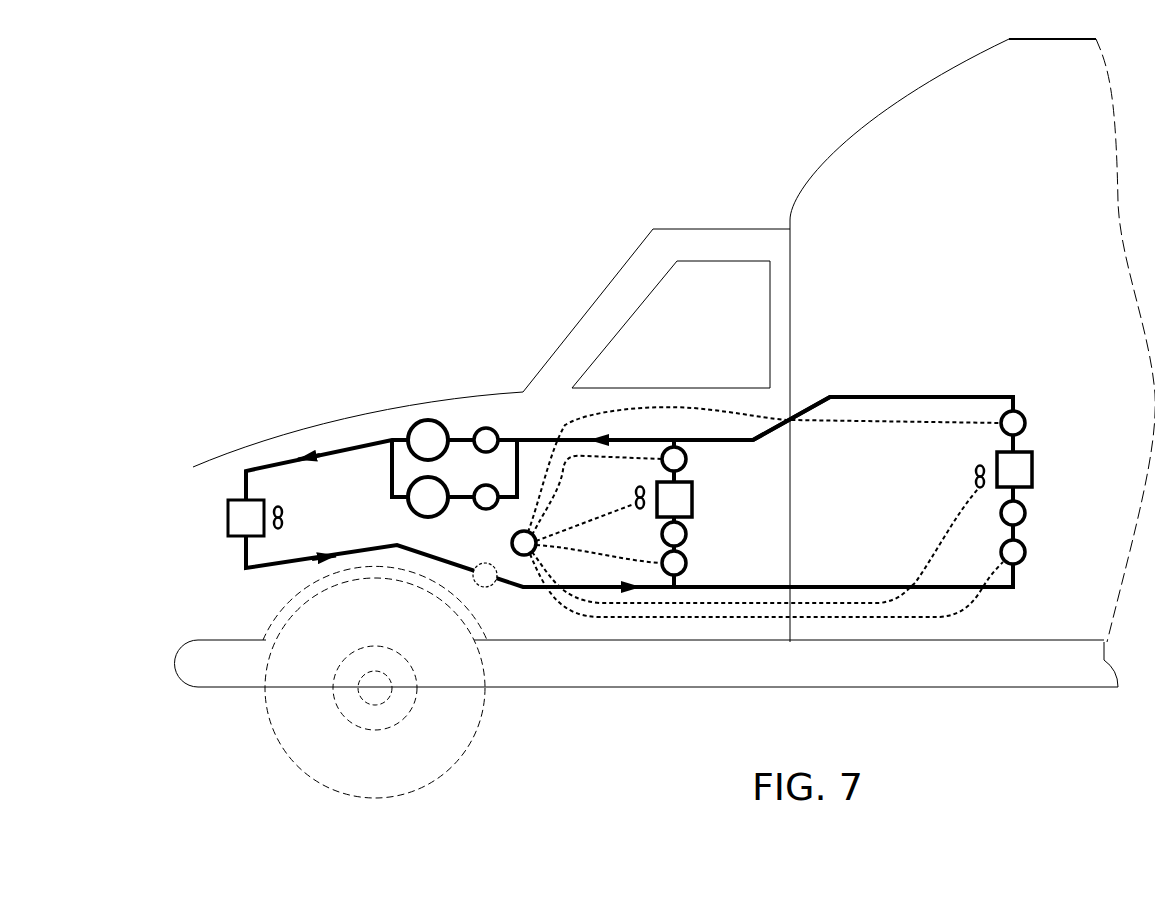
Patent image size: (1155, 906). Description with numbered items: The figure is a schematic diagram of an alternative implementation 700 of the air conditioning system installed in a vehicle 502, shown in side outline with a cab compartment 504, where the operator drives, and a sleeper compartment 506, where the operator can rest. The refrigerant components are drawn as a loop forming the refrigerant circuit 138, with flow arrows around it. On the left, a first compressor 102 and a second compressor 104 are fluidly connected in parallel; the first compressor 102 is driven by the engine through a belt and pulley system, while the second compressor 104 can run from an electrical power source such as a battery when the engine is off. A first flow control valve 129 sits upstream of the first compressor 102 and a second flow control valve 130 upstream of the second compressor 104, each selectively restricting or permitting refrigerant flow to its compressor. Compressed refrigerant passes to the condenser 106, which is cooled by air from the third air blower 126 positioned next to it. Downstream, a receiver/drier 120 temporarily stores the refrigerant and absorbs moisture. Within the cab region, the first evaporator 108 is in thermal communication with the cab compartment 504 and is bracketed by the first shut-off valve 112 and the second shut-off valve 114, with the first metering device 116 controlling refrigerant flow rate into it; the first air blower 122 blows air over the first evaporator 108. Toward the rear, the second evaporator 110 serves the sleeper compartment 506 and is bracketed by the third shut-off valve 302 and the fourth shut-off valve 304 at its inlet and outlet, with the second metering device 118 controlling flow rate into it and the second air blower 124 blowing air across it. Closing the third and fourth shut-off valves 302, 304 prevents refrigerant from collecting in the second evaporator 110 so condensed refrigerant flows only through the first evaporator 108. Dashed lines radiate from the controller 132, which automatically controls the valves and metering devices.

The thermal management system 700 is at (253, 180).
The vehicle 502 is at (757, 156).
The cab compartment 504 is at (662, 333).
The sleeper compartment 506 is at (938, 169).
The refrigerant circuit 138 is at (951, 393).
The condenser 106 is at (228, 517).
The third air blower 126 is at (278, 506).
The second compressor 104 is at (412, 427).
The first compressor 102 is at (414, 512).
The second flow control valve 130 is at (492, 428).
The first flow control valve 129 is at (488, 510).
The receiver/drier 120 is at (487, 588).
The controller 132 is at (530, 555).
The first air blower 122 is at (637, 487).
The second shut-off valve 114 is at (687, 461).
The first evaporator 108 is at (692, 501).
The first metering device 116 is at (687, 535).
The first shut-off valve 112 is at (687, 565).
The second air blower 124 is at (977, 466).
The fourth shut-off valve 304 is at (1026, 425).
The second evaporator 110 is at (1032, 471).
The second metering device 118 is at (1026, 515).
The third shut-off valve 302 is at (1026, 553).